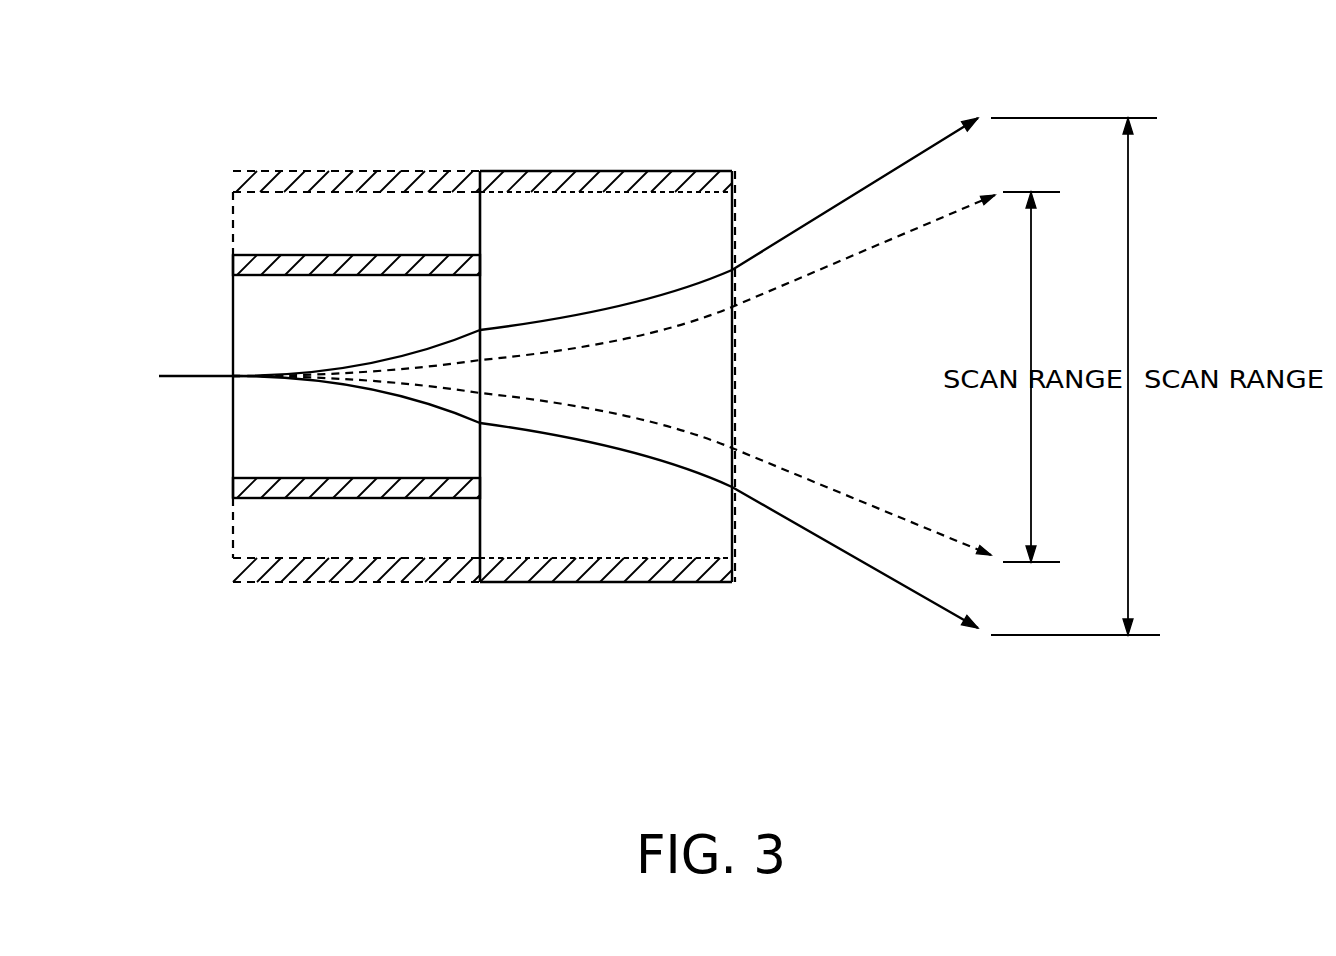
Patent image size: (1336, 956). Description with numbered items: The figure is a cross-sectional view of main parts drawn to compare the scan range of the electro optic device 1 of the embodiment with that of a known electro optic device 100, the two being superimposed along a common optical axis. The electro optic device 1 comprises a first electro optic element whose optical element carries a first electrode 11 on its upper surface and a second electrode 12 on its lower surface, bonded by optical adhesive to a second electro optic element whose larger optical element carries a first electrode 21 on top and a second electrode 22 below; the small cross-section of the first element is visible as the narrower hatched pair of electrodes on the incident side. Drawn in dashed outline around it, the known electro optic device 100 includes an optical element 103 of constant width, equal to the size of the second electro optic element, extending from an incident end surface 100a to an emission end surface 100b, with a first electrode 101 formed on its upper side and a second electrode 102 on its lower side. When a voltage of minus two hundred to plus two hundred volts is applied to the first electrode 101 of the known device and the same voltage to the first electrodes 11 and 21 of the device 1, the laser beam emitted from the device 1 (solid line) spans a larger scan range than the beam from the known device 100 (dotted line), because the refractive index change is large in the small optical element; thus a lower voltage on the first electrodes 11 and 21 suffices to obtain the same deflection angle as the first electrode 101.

The electro optic device 1 is at (763, 146).
The first electrode 11 is at (443, 262).
The second electrode 12 is at (420, 490).
The first electrode 21 is at (662, 185).
The second electrode 22 is at (604, 584).
The known electro optic device 100 is at (287, 150).
The incident end surface 100a is at (232, 217).
The emission end surface 100b is at (738, 210).
The first electrode 101 is at (386, 182).
The second electrode 102 is at (358, 584).
The optical element 103 is at (232, 526).